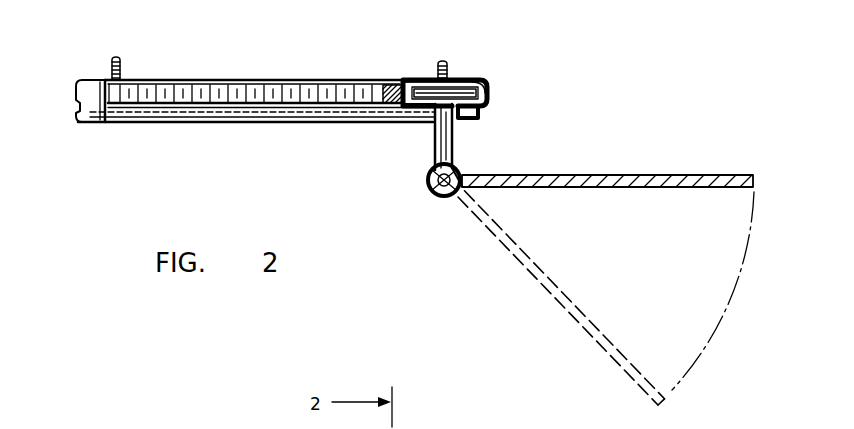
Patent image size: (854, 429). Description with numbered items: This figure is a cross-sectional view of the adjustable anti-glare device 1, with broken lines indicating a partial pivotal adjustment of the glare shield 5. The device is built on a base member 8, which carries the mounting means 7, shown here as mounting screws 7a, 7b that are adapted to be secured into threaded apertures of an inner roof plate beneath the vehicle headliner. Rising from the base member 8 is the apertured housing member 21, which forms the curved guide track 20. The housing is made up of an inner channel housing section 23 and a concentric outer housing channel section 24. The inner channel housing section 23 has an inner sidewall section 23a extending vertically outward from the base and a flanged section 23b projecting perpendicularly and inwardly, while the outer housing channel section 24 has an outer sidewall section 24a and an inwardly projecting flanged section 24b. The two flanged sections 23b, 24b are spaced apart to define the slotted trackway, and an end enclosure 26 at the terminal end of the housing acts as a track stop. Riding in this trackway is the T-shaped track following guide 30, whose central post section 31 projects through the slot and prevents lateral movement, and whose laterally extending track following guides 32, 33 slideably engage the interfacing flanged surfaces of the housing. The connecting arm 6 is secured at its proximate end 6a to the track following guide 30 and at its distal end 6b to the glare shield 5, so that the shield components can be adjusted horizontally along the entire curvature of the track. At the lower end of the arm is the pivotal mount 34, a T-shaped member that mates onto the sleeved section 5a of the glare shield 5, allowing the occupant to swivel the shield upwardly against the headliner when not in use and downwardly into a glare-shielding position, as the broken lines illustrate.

The adjustable anti-glare device 1 is at (272, 136).
The glare shield 5 is at (660, 176).
The sleeved section 5a is at (425, 183).
The connecting arm 6 is at (433, 144).
The proximate end 6a is at (453, 133).
The distal end 6b is at (463, 187).
The mounting means 7 is at (97, 66).
The mounting screw 7a is at (119, 68).
The mounting screw 7b is at (440, 72).
The base member 8 is at (272, 79).
The curved guide track 20 is at (177, 126).
The apertured housing member 21 is at (215, 79).
The inner channel housing section 23 is at (390, 103).
The inner sidewall section 23a is at (382, 79).
The flanged section 23b is at (428, 117).
The outer housing channel section 24 is at (508, 107).
The outer sidewall section 24a is at (490, 88).
The flanged section 24b is at (483, 110).
The end enclosure 26 is at (82, 97).
The track following guide 30 is at (488, 71).
The central post section 31 is at (428, 133).
The track following guide 32 is at (463, 79).
The track following guide 33 is at (410, 81).
The pivotal mount 34 is at (445, 200).